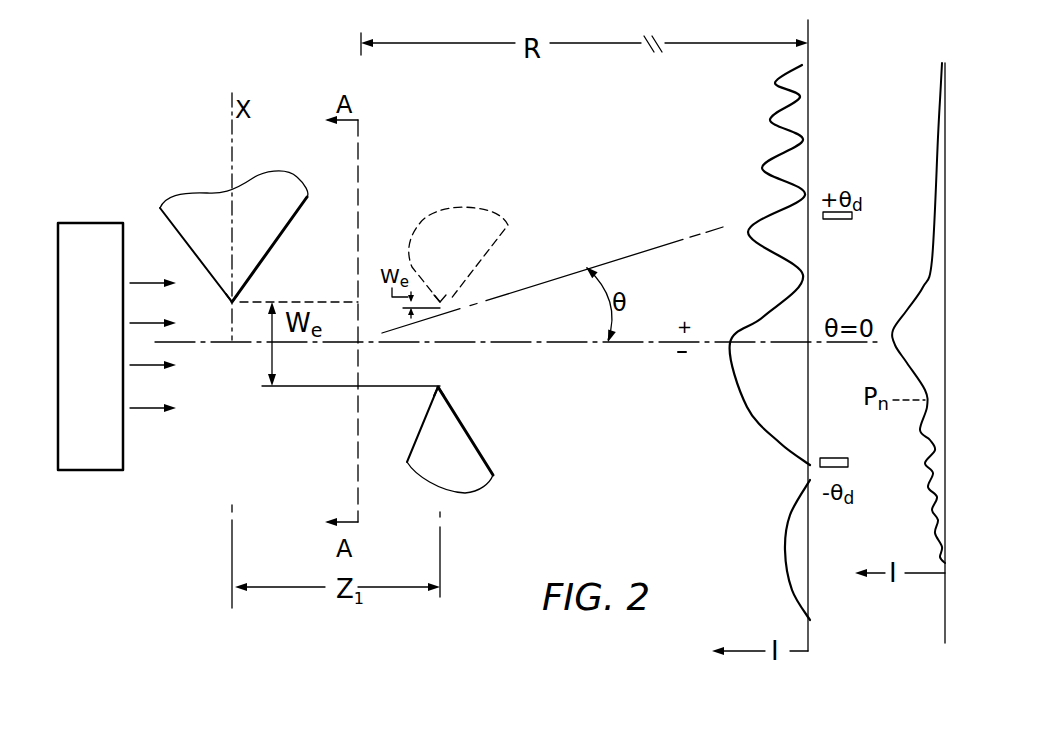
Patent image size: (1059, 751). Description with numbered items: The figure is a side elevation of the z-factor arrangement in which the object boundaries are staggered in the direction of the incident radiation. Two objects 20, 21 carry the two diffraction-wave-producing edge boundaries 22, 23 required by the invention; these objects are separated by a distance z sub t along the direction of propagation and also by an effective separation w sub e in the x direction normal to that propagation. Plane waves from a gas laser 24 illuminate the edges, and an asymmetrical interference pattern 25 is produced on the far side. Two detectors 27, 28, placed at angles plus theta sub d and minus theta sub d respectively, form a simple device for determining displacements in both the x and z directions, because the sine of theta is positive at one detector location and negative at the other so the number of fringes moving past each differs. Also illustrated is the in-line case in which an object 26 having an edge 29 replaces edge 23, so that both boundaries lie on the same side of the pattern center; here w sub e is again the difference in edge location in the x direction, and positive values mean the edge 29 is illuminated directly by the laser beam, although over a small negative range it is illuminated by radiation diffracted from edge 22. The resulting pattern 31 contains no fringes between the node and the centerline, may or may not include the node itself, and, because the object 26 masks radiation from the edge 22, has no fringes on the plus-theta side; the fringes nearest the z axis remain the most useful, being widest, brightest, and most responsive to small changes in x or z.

The object 20 is at (247, 241).
The object 21 is at (450, 459).
The edge boundary 22 is at (232, 302).
The edge boundary 23 is at (440, 386).
The gas laser 24 is at (95, 470).
The asymmetrical interference pattern 25 is at (772, 460).
The object 26 is at (457, 262).
The detector 27 is at (852, 217).
The detector 28 is at (848, 463).
The edge 29 is at (450, 300).
The pattern 31 is at (918, 506).